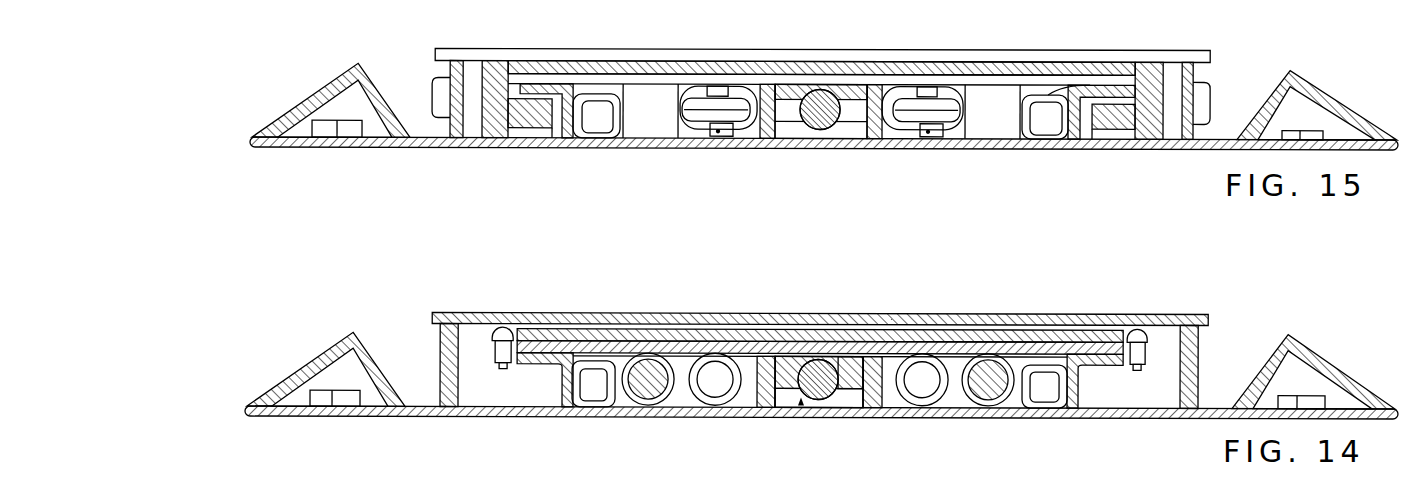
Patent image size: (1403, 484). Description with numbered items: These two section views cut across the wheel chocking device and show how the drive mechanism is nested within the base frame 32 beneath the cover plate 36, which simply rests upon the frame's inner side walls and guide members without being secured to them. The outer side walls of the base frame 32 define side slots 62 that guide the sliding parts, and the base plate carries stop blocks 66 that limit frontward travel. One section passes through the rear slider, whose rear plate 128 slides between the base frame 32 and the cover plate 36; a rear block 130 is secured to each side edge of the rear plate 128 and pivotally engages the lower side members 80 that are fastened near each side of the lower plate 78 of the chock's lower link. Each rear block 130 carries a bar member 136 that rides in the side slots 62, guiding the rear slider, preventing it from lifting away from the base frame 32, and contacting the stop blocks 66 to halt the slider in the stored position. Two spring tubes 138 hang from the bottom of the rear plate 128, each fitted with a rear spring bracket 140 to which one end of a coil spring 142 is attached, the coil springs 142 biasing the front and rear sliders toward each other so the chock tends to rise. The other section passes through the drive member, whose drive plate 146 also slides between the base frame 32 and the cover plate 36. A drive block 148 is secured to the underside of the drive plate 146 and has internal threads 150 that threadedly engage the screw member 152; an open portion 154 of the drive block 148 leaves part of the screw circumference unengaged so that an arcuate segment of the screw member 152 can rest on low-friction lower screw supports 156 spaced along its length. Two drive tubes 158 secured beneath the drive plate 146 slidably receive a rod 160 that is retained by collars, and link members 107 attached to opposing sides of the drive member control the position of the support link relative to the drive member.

In FIG. 15, the base frame 32 is at (788, 156).
In FIG. 14, the base frame 32 is at (565, 430).
In FIG. 15, the cover plate 36 is at (1022, 100).
In FIG. 14, the cover plate 36 is at (1090, 338).
In FIG. 15, the side slots 62 is at (560, 128).
In FIG. 14, the side slots 62 is at (535, 387).
In FIG. 15, the stop blocks 66 is at (545, 132).
In FIG. 15, the lower plate 78 is at (1200, 57).
In FIG. 15, the lower side members 80 is at (472, 130).
In FIG. 14, the link members 107 is at (491, 337).
In FIG. 15, the rear plate 128 is at (658, 72).
In FIG. 15, the rear block 130 is at (450, 138).
In FIG. 15, the bar member 136 is at (517, 122).
In FIG. 15, the spring tubes 138 is at (647, 128).
In FIG. 15, the rear spring bracket 140 is at (695, 122).
In FIG. 15, the coil springs 142 is at (732, 130).
In FIG. 14, the coil springs 142 is at (713, 393).
In FIG. 14, the drive plate 146 is at (893, 365).
In FIG. 14, the drive block 148 is at (793, 390).
In FIG. 14, the internal threads 150 is at (823, 397).
In FIG. 14, the screw member 152 is at (813, 398).
In FIG. 14, the open portion 154 is at (800, 404).
In FIG. 14, the lower screw supports 156 is at (847, 400).
In FIG. 14, the drive tubes 158 is at (662, 395).
In FIG. 14, the rod 160 is at (635, 395).